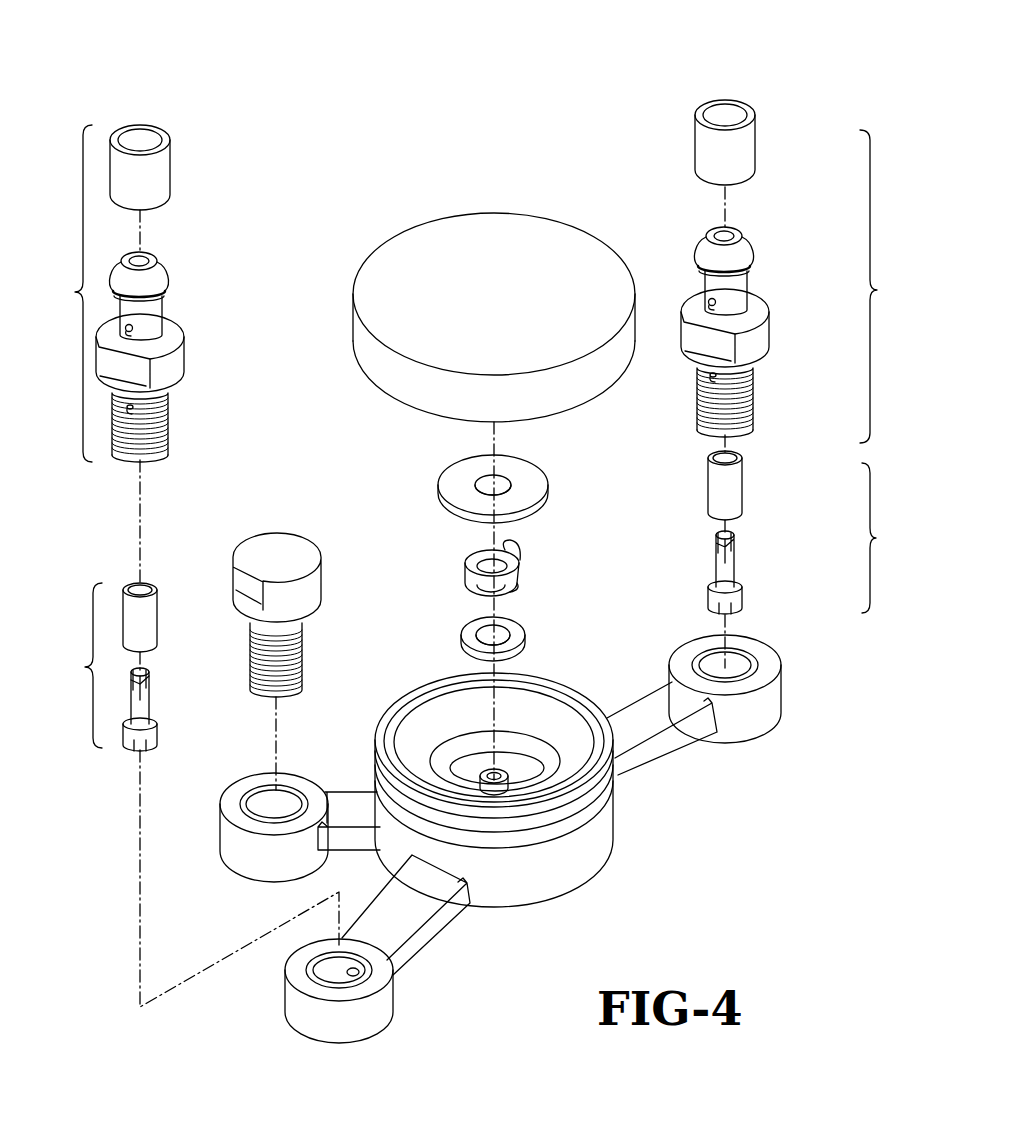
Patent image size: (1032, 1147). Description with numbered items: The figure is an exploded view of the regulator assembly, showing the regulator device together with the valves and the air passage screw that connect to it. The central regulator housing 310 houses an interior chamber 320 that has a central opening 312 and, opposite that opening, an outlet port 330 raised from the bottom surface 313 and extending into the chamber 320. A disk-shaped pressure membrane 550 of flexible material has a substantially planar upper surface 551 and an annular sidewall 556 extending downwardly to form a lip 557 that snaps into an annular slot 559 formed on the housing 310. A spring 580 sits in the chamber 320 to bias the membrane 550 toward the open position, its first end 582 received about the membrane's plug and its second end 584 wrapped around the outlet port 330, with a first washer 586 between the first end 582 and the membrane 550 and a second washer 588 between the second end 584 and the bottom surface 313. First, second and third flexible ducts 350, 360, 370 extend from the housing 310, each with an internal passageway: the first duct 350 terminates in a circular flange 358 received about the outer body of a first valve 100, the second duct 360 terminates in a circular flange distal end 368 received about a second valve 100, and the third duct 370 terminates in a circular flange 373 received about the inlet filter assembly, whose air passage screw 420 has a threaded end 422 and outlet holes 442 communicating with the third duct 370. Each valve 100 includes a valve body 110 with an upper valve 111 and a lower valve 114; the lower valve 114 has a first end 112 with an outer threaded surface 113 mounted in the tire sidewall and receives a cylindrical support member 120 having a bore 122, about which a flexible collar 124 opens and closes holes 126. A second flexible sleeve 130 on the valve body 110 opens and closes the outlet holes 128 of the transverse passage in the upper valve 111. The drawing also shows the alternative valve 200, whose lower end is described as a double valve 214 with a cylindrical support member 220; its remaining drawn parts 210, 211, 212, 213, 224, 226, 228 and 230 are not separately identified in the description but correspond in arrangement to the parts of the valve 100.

The valve 100 is at (175, 117).
The valve body 110 is at (186, 362).
The upper valve 111 is at (60, 293).
The first end 112 is at (168, 446).
The outer threaded surface 113 is at (157, 450).
The lower valve 114 is at (134, 661).
The cylindrical support member 120 is at (152, 700).
The bore 122 is at (133, 695).
The flexible collar 124 is at (156, 632).
The holes 126 is at (130, 421).
The outlet holes 128 is at (135, 328).
The second flexible sleeve 130 is at (172, 176).
The valve 200 is at (679, 117).
The fitting body 210 is at (735, 332).
The fitting subassembly 211 is at (898, 286).
The threaded portion 212 is at (762, 395).
The threads 213 is at (762, 405).
The double valve 214 is at (817, 532).
The cylindrical support member 220 is at (760, 572).
The sleeve 224 is at (768, 485).
The lower cross hole 226 is at (672, 393).
The upper cross hole 228 is at (678, 275).
The cap 230 is at (769, 142).
The central regulator housing 310 is at (593, 850).
The central opening 312 is at (442, 712).
The bottom surface 313 is at (470, 788).
The interior chamber 320 is at (536, 716).
The outlet port 330 is at (503, 772).
The first flexible duct 350 is at (413, 908).
The circular flange 358 is at (363, 1023).
The second flexible duct 360 is at (645, 727).
The circular flange distal end 368 is at (757, 717).
The third flexible duct 370 is at (350, 802).
The circular flange 373 is at (270, 862).
The air passage screw 420 is at (278, 542).
The threaded end 422 is at (289, 670).
The outlet holes 442 is at (263, 632).
The pressure membrane 550 is at (522, 228).
The upper surface 551 is at (514, 311).
The annular sidewall 556 is at (390, 368).
The lip 557 is at (578, 407).
The annular slot 559 is at (517, 828).
The spring 580 is at (472, 570).
The first end 582 is at (514, 546).
The second end 584 is at (510, 582).
The first washer 586 is at (465, 490).
The second washer 588 is at (518, 632).